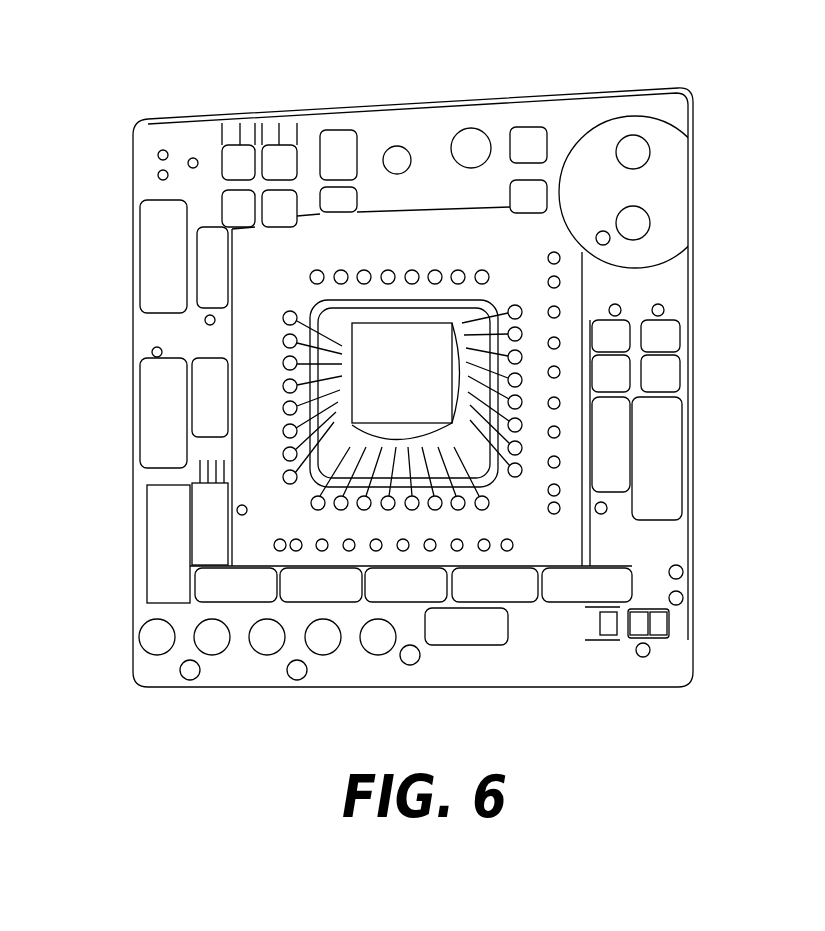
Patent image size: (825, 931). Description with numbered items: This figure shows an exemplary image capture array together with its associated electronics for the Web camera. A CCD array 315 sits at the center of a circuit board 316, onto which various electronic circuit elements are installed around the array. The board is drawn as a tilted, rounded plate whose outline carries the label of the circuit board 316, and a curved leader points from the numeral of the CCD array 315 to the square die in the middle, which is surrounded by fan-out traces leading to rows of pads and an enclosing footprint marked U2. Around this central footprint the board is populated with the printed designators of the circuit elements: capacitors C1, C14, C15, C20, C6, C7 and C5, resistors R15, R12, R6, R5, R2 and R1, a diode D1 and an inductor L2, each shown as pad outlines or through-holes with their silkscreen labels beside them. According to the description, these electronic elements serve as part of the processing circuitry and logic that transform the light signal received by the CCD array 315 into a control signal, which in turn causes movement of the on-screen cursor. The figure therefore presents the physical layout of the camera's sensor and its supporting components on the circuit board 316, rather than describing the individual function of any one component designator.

The CCD array 315 is at (388, 366).
The circuit board 316 is at (672, 103).
The integrated circuit U2 footprint U2 is at (411, 386).
The capacitor C1 is at (184, 256).
The capacitor C14 is at (355, 171).
The capacitor C15 is at (473, 162).
The diode D1 is at (610, 192).
The resistor R15 is at (609, 337).
The resistor R12 is at (656, 337).
The capacitor C6 is at (611, 471).
The capacitor C7 is at (657, 475).
The capacitor C20 is at (184, 391).
The inductor L2 is at (208, 624).
The resistor R6 is at (278, 611).
The resistor R5 is at (348, 624).
The resistor R2 is at (495, 599).
The resistor R1 is at (587, 599).
The capacitor C5 is at (547, 637).